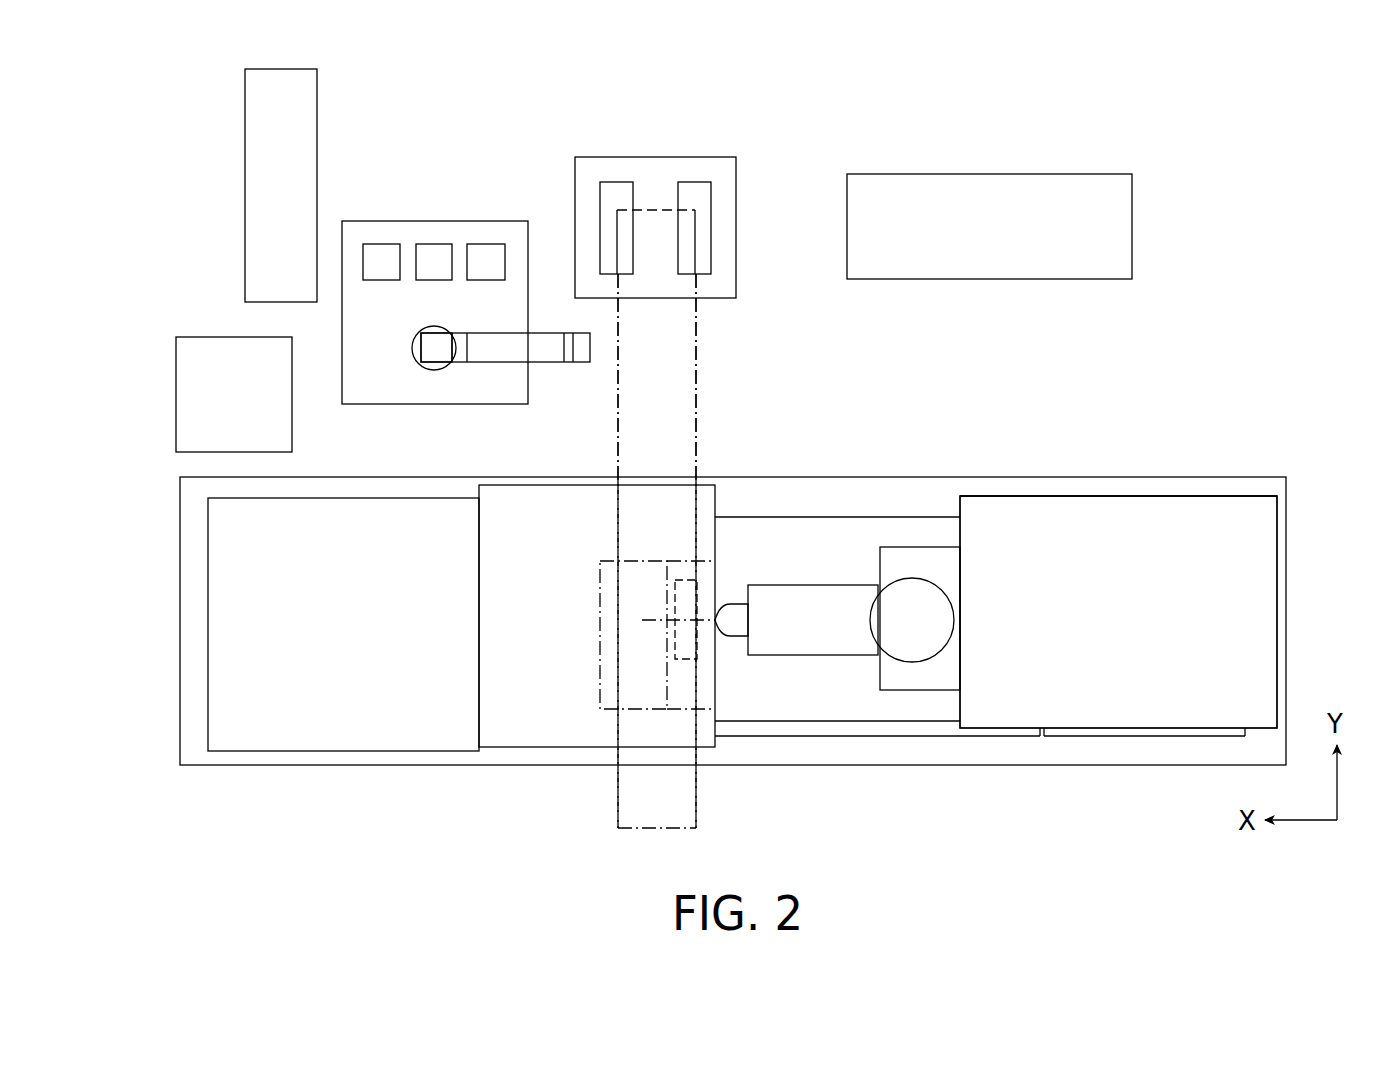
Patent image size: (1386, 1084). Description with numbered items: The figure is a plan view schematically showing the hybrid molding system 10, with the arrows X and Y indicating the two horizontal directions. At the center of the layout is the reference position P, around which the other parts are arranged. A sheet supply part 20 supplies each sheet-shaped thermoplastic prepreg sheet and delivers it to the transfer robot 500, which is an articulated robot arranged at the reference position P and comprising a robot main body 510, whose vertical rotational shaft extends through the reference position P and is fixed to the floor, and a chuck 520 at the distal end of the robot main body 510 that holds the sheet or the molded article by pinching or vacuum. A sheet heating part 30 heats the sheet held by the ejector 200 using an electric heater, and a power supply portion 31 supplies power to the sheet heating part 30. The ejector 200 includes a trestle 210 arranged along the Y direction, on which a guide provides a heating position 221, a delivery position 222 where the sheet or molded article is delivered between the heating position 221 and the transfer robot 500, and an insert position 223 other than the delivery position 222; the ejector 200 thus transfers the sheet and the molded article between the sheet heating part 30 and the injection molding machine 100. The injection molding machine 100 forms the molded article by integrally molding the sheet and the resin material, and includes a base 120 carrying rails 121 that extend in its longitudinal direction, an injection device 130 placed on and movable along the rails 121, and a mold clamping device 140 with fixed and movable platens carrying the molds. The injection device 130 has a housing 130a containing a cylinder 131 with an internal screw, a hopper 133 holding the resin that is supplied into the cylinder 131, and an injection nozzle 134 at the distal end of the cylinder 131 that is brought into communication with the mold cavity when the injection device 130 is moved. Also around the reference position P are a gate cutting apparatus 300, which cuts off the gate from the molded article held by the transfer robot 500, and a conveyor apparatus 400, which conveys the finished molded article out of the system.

The hybrid molding system 10 is at (380, 769).
The sheet supply part 20 is at (490, 221).
The sheet heating part 30 is at (657, 157).
The power supply portion 31 is at (1025, 174).
The injection molding machine 100 is at (1215, 497).
The base 120 is at (912, 766).
The rails 121 is at (1125, 736).
The injection device 130 is at (1105, 540).
The housing 130a is at (1182, 580).
The cylinder 131 is at (836, 596).
The hopper 133 is at (918, 578).
The injection nozzle 134 is at (734, 617).
The mold clamping device 140 is at (277, 588).
The ejector 200 is at (698, 412).
The trestle 210 is at (698, 803).
The heating position 221 is at (661, 246).
The delivery position 222 is at (662, 346).
The insert position 223 is at (647, 643).
The gate cutting apparatus 300 is at (176, 393).
The conveyor apparatus 400 is at (245, 212).
The transfer robot 500 is at (428, 328).
The robot main body 510 is at (428, 346).
The chuck 520 is at (582, 362).
The reference position P is at (433, 370).